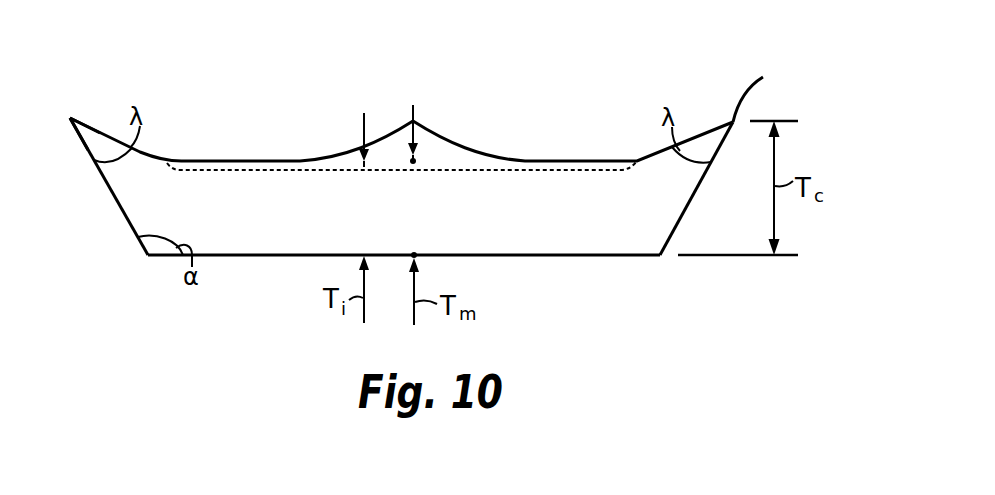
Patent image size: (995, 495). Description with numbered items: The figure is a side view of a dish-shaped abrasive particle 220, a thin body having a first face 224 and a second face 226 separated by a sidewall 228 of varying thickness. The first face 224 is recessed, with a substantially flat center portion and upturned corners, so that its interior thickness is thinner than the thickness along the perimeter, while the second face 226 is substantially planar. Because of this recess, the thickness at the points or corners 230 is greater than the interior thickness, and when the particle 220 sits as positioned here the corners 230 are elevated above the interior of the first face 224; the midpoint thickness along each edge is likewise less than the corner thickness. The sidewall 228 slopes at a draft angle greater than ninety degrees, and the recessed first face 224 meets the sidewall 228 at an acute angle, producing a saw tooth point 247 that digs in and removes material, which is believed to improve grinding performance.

The dish-shaped abrasive particle 220 is at (417, 169).
The first face 224 is at (553, 161).
The second face 226 is at (557, 256).
The sidewall 228 is at (112, 207).
The points or corners 230 is at (738, 156).
The saw tooth point 247 is at (92, 138).